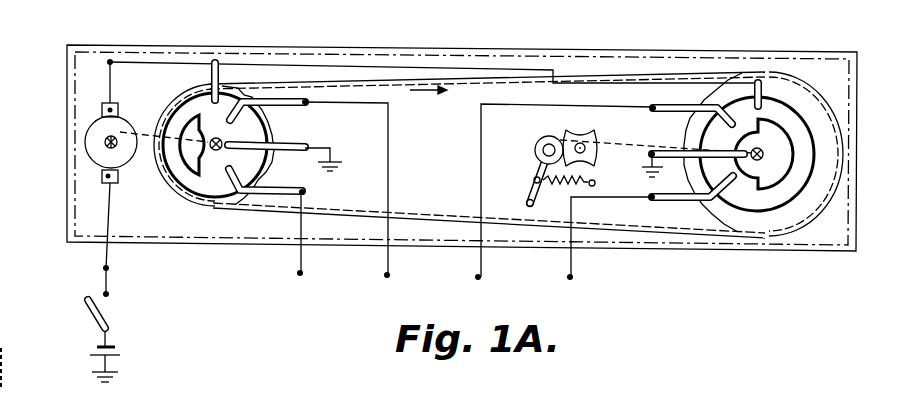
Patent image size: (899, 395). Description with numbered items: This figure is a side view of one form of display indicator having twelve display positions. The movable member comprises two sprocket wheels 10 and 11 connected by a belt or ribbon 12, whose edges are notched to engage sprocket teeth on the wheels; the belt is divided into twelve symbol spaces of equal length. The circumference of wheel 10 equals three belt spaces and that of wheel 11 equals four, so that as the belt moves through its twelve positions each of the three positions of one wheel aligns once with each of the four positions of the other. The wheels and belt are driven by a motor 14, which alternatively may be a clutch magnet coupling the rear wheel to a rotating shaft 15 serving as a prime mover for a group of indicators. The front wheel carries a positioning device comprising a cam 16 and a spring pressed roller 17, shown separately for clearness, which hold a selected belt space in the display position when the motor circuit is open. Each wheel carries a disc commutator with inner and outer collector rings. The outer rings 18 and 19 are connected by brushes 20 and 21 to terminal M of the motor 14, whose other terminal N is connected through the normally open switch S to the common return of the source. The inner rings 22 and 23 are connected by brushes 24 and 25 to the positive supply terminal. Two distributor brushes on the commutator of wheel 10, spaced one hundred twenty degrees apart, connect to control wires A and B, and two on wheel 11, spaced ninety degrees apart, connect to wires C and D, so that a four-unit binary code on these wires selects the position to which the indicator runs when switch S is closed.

The sprocket wheel 10 is at (266, 175).
The sprocket wheel 11 is at (664, 112).
The belt or ribbon 12 is at (420, 208).
The motor 14 is at (93, 137).
The rotating shaft 15 is at (107, 146).
The cam 16 is at (568, 132).
The spring pressed roller 17 is at (536, 146).
The outer collector ring 18 is at (173, 98).
The outer collector ring 19 is at (784, 112).
The brush 20 is at (215, 60).
The brush 21 is at (763, 92).
The inner collector ring 22 is at (186, 165).
The inner collector ring 23 is at (766, 183).
The brush 24 is at (300, 144).
The brush 25 is at (650, 154).